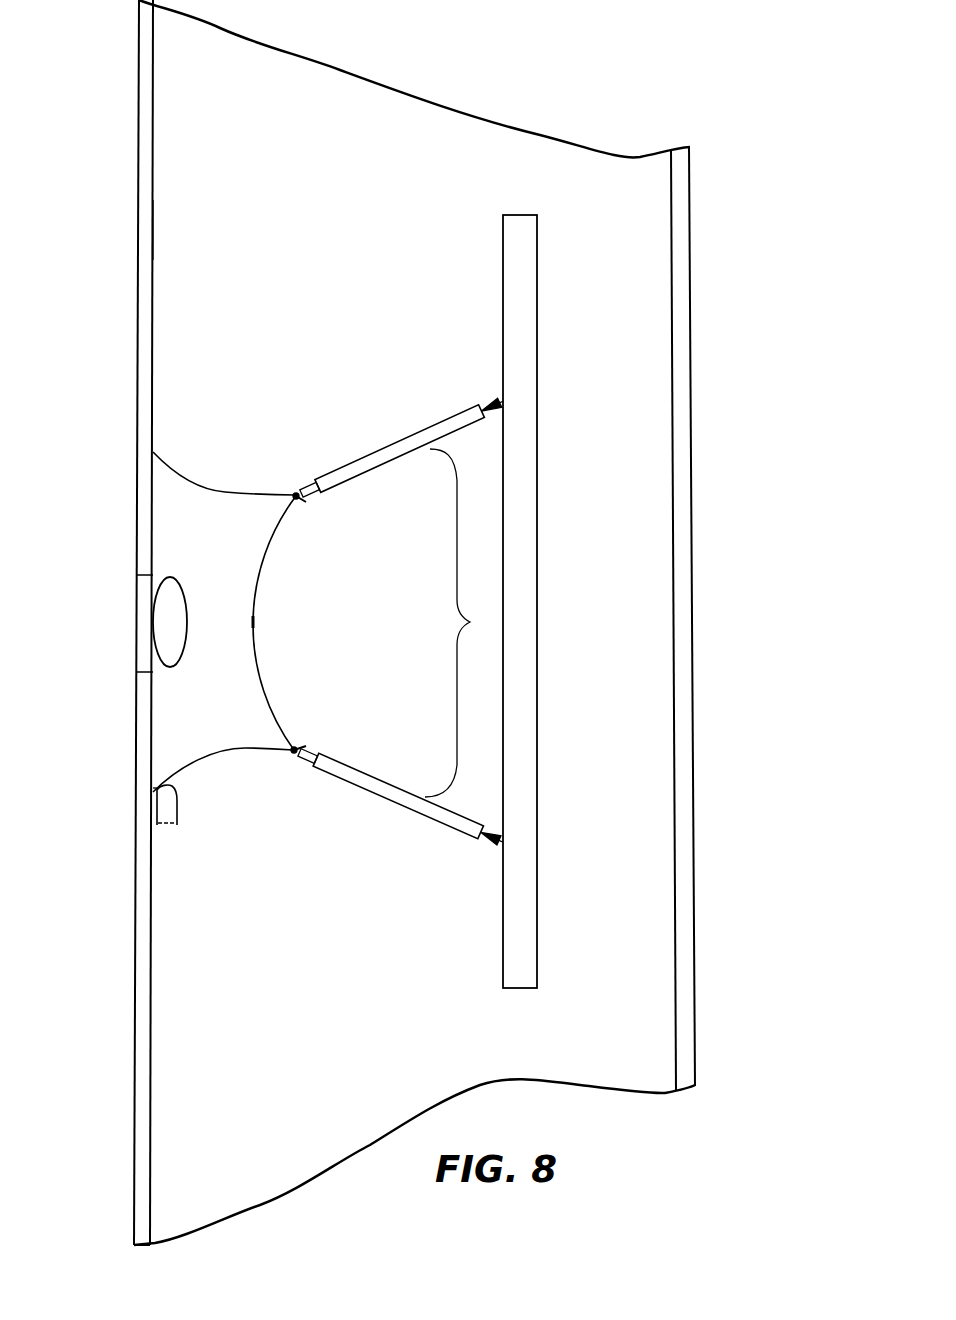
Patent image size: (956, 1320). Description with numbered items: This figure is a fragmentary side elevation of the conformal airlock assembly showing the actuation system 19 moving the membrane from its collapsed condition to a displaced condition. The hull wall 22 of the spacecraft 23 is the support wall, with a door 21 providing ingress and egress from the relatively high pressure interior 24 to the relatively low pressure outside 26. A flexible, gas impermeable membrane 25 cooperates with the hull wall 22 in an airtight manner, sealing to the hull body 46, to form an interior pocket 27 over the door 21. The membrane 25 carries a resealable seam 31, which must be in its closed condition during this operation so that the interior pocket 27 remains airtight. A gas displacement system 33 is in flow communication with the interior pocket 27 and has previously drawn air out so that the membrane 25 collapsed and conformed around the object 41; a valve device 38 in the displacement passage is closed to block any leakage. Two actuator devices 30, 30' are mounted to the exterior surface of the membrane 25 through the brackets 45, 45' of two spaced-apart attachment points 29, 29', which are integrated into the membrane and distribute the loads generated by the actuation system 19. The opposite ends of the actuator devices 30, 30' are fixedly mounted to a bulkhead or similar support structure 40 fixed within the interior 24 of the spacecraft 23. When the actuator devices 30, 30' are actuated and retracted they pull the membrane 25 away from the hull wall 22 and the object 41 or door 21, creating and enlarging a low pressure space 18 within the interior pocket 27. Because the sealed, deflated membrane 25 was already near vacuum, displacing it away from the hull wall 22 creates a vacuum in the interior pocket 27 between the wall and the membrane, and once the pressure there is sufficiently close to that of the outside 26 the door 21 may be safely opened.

The low pressure space 18 is at (214, 593).
The actuation system 19 is at (462, 623).
The door 21 is at (137, 638).
The hull wall 22 is at (150, 920).
The spacecraft 23 is at (153, 232).
The interior 24 is at (400, 583).
The flexible membrane 25 is at (240, 750).
The outside 26 is at (62, 688).
The interior pocket 27 is at (220, 492).
The attachment point 29 is at (290, 796).
The attachment point 29' is at (278, 445).
The actuator device 30 is at (401, 813).
The actuator device 30' is at (403, 433).
The resealable seam 31 is at (255, 622).
The gas displacement system 33 is at (168, 826).
The valve device 38 is at (157, 788).
The support structure 40 is at (531, 462).
The object 41 is at (163, 613).
The bracket 45 is at (335, 717).
The bracket 45' is at (323, 528).
The hull body 46 is at (693, 745).